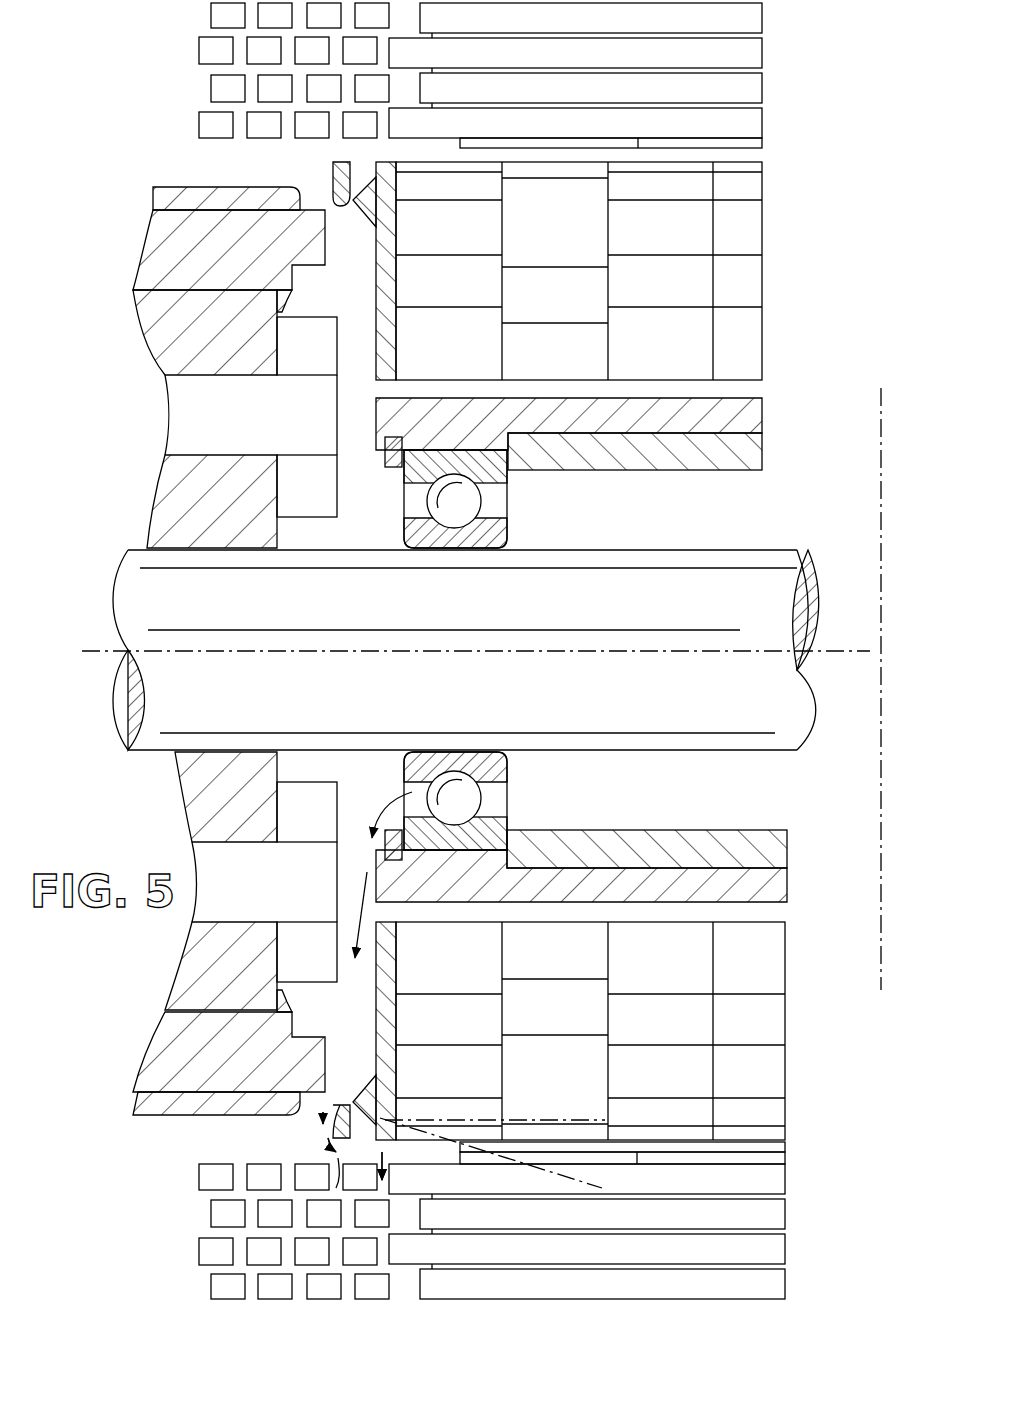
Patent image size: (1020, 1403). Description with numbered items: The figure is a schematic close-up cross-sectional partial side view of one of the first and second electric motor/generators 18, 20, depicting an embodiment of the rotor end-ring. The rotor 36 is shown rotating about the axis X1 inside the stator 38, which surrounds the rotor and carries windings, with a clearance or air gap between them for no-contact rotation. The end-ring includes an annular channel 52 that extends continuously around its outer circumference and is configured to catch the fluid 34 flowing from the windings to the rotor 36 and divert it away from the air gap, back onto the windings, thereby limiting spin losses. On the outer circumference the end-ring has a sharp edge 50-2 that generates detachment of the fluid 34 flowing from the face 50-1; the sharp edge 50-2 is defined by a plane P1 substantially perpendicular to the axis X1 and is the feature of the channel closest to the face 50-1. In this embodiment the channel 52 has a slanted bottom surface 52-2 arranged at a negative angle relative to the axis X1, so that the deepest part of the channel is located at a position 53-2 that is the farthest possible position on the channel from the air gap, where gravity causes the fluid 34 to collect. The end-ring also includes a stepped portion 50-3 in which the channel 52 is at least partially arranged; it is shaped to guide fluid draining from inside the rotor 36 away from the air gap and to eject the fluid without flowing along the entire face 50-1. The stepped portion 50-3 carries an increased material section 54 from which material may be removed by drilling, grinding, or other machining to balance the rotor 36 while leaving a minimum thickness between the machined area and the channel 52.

The first electric motor/generator 18 is at (646, 1220).
The second electric motor/generator 20 is at (824, 1195).
The fluid 34 is at (353, 932).
The rotor 36 is at (762, 1020).
The stator 38 is at (200, 1173).
The face 50-1 is at (367, 1037).
The sharp edge 50-2 is at (356, 1140).
The stepped portion 50-3 is at (343, 209).
The annular channel 52 is at (363, 1142).
The slanted bottom surface 52-2 is at (352, 1108).
The position of deepest part of the channel 53-2 is at (337, 1107).
The increased material section 54 is at (363, 208).
The plane P1 is at (880, 423).
The axis X1 is at (838, 650).